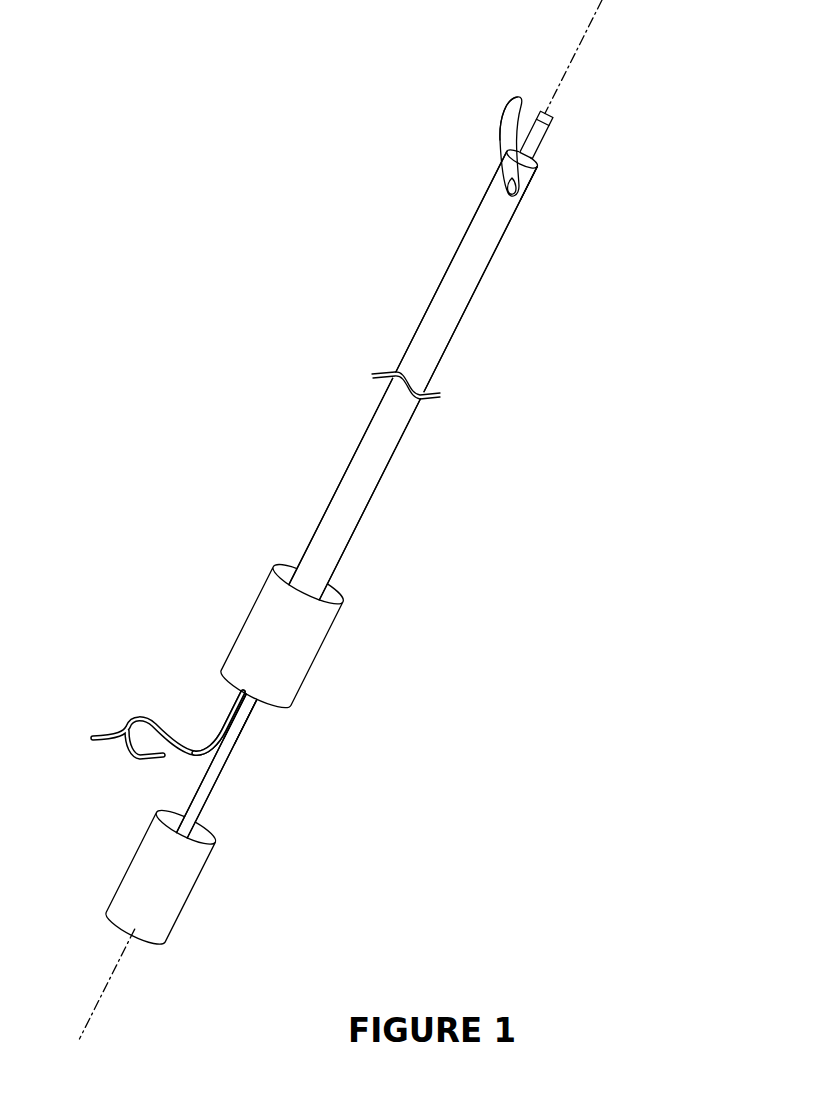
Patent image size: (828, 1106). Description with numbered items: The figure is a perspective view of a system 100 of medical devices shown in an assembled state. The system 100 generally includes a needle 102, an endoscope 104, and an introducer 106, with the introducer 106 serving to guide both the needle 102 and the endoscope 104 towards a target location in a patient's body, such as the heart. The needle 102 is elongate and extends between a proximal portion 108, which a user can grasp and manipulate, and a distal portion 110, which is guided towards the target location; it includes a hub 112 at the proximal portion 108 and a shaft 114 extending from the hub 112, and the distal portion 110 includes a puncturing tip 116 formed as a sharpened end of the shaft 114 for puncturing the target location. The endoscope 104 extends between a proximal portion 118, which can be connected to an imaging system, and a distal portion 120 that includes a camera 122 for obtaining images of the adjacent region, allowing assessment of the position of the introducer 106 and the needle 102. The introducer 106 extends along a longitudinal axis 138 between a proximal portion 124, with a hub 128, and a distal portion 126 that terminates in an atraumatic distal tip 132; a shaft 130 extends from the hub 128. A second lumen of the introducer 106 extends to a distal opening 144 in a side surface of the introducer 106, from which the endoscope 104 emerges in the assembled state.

The system 100 is at (208, 270).
The needle 102 is at (214, 806).
The endoscope 104 is at (214, 719).
The introducer 106 is at (396, 350).
The proximal portion 108 is at (230, 756).
The distal portion 110 is at (599, 138).
The hub 112 is at (187, 873).
The shaft 114 is at (248, 714).
The puncturing tip 116 is at (546, 116).
The proximal portion 118 is at (120, 719).
The distal portion 120 is at (488, 126).
The camera 122 is at (520, 98).
The proximal portion 124 is at (322, 556).
The distal portion 126 is at (523, 269).
The hub 128 is at (286, 656).
The shaft 130 is at (413, 375).
The distal tip 132 is at (540, 163).
The longitudinal axis 138 is at (567, 72).
The distal opening 144 is at (520, 200).